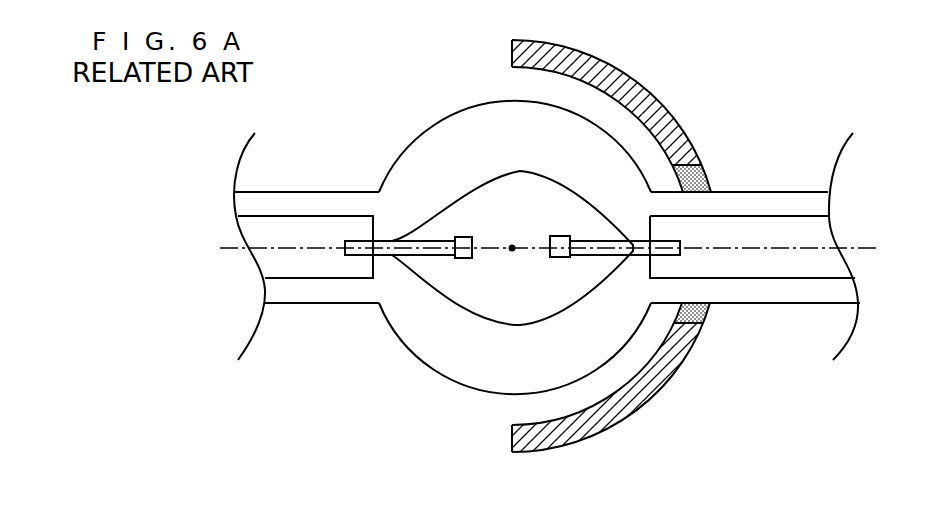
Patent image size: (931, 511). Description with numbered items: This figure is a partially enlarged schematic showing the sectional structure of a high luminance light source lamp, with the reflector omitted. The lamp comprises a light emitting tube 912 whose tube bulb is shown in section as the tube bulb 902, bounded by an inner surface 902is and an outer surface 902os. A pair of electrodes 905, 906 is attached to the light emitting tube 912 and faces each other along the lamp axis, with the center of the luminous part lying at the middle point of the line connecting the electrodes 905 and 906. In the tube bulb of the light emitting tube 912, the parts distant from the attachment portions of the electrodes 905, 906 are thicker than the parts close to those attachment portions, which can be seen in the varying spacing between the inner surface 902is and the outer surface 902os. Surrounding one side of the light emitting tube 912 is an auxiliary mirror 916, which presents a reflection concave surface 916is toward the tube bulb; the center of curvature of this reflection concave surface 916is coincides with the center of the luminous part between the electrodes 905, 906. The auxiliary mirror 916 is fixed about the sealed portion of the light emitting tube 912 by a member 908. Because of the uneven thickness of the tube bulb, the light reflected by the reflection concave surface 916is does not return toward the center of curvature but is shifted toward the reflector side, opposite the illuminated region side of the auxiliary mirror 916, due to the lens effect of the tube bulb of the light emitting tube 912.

The light emitting tube 912 is at (366, 84).
The arc tube / light emitting tube 902 is at (394, 160).
The inner surface of arc tube 902is is at (427, 288).
The outer surface of arc tube 902os is at (423, 356).
The electrode 905 is at (460, 258).
The electrode 906 is at (558, 257).
The adhesive / fixing member 908 is at (712, 190).
The auxiliary mirror 916 is at (643, 80).
The reflection concave surface 916is is at (530, 428).